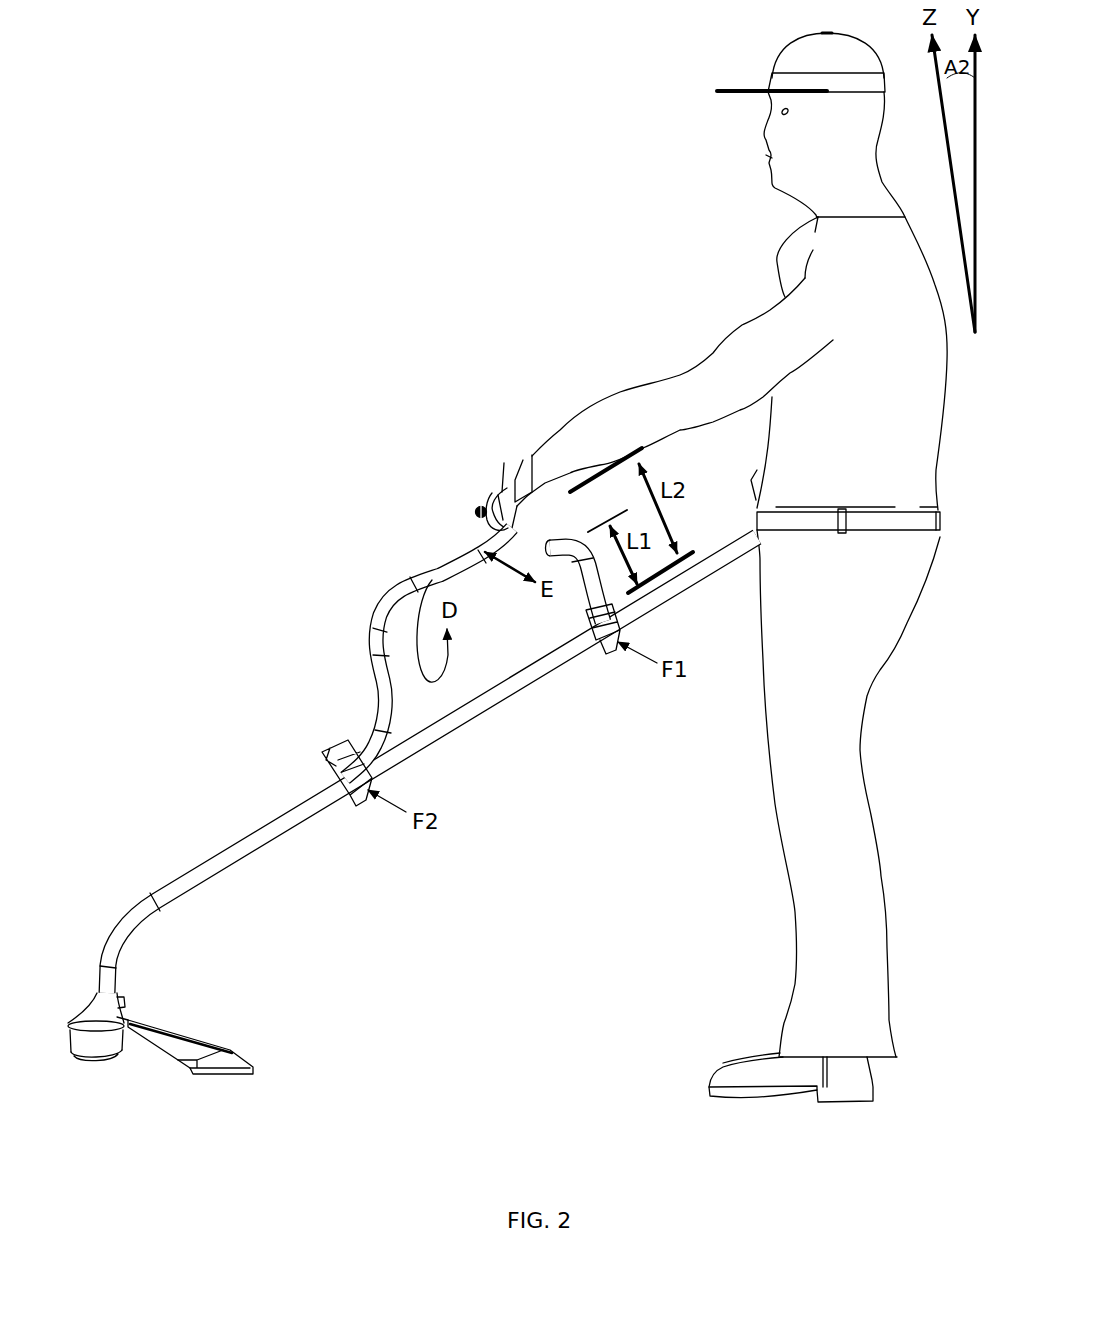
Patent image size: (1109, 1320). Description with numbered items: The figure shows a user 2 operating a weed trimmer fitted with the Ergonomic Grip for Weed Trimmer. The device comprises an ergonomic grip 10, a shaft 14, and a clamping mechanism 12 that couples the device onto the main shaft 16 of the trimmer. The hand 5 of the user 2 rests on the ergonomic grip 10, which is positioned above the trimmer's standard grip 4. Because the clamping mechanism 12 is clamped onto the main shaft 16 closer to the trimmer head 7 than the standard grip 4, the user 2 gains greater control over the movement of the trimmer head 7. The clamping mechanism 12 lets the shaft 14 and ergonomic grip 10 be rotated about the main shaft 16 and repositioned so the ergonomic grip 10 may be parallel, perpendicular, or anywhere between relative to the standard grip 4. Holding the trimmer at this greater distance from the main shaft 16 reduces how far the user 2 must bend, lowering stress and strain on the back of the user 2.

The user 2 is at (719, 567).
The standard grip 4 is at (575, 581).
The hand 5 is at (494, 497).
The trimmer head 7 is at (226, 1082).
The ergonomic grip 10 is at (474, 513).
The clamping mechanism 12 is at (352, 722).
The shaft 14 is at (380, 604).
The main shaft 16 is at (493, 700).